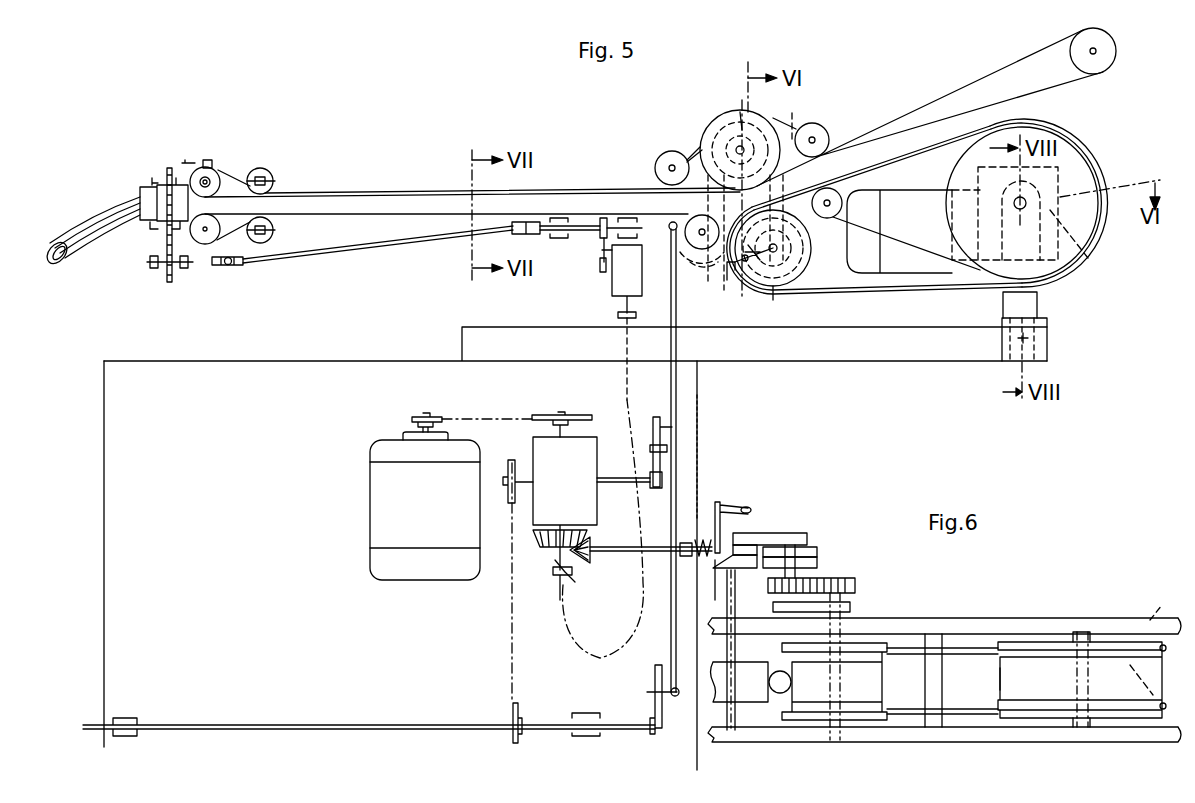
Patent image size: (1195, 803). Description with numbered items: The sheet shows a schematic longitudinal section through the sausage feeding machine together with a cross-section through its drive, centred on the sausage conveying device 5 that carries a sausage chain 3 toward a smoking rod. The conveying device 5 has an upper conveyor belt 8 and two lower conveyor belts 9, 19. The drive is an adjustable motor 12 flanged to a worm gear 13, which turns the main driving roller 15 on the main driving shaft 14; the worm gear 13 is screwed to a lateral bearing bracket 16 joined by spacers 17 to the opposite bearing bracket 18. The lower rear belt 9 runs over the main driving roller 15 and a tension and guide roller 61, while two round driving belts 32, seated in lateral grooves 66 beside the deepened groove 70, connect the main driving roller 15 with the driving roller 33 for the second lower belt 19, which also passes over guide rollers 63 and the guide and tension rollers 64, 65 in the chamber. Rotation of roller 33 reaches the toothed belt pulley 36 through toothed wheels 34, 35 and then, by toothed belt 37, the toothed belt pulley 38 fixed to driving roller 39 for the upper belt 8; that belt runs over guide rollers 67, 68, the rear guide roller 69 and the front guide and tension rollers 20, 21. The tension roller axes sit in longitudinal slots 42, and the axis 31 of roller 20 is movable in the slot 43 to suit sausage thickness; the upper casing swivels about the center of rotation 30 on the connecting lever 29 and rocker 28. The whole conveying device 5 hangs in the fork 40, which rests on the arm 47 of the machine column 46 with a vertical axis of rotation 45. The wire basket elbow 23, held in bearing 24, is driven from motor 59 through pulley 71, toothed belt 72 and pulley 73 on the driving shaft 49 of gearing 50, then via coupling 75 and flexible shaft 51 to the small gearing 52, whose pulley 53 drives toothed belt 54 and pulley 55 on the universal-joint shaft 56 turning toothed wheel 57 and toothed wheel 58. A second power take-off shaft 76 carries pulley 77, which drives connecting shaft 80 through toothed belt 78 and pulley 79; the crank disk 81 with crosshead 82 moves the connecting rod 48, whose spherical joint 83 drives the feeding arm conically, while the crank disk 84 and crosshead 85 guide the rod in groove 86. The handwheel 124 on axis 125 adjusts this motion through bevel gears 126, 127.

In FIG. 6, the sausage chain 3 is at (780, 688).
In FIG. 5, the sausage conveying device 5 is at (576, 176).
In FIG. 6, the sausage conveying device 5 is at (1008, 608).
In FIG. 5, the upper conveyor belt 8 is at (980, 80).
In FIG. 5, the lower rear conveyor belt 9 is at (930, 153).
In FIG. 5, the adjustable motor 12 is at (918, 266).
In FIG. 5, the worm gear 13 is at (1066, 195).
In FIG. 5, the main driving shaft 14 is at (1028, 208).
In FIG. 6, the main driving shaft 14 is at (1082, 640).
In FIG. 5, the main driving roller 15 is at (1048, 241).
In FIG. 6, the main driving roller 15 is at (1112, 668).
In FIG. 6, the lateral bearing bracket 16 is at (918, 622).
In FIG. 6, the spacers 17 is at (942, 640).
In FIG. 6, the bearing bracket 18 is at (962, 730).
In FIG. 5, the second lower conveyor belt 19 is at (395, 210).
In FIG. 5, the guide and tension roller 20 is at (214, 175).
In FIG. 5, the guide and tension roller 21 is at (263, 168).
In FIG. 5, the wire basket elbow 23 is at (84, 212).
In FIG. 5, the bearing 24 is at (156, 180).
In FIG. 5, the rocker 28 is at (760, 288).
In FIG. 6, the rocker 28 is at (815, 603).
In FIG. 5, the connecting lever 29 is at (795, 113).
In FIG. 6, the connecting lever 29 is at (754, 540).
In FIG. 5, the center of rotation 30 is at (206, 176).
In FIG. 5, the axis 31 is at (205, 179).
In FIG. 5, the round driving belts 32 is at (945, 292).
In FIG. 6, the round driving belts 32 is at (912, 708).
In FIG. 5, the driving roller 33 is at (803, 262).
In FIG. 6, the driving roller 33 is at (858, 660).
In FIG. 5, the toothed wheel 34 is at (790, 304).
In FIG. 6, the toothed wheel 34 is at (856, 586).
In FIG. 5, the toothed wheel 35 is at (730, 276).
In FIG. 6, the toothed wheel 35 is at (825, 582).
In FIG. 5, the toothed belt pulley 36 is at (710, 272).
In FIG. 6, the toothed belt pulley 36 is at (812, 557).
In FIG. 5, the toothed belt 37 is at (690, 148).
In FIG. 6, the toothed belt 37 is at (787, 550).
In FIG. 5, the toothed belt pulley 38 is at (710, 125).
In FIG. 6, the toothed belt pulley 38 is at (762, 550).
In FIG. 5, the driving roller 39 is at (735, 112).
In FIG. 6, the driving roller 39 is at (740, 665).
In FIG. 5, the fork 40 is at (1048, 272).
In FIG. 5, the longitudinally running slots 42 is at (282, 235).
In FIG. 5, the slot 43 is at (194, 162).
In FIG. 5, the vertical axis of rotation 45 is at (1047, 338).
In FIG. 5, the machine column 46 is at (697, 376).
In FIG. 5, the arm 47 is at (858, 340).
In FIG. 5, the connecting rod 48 is at (676, 398).
In FIG. 5, the driving shaft 49 is at (567, 560).
In FIG. 5, the gearing 50 is at (577, 492).
In FIG. 5, the flexible driving shaft 51 is at (570, 640).
In FIG. 5, the small gearing 52 is at (639, 280).
In FIG. 5, the toothed belt pulley 53 is at (600, 272).
In FIG. 5, the toothed belt 54 is at (602, 248).
In FIG. 5, the toothed belt pulley 55 is at (598, 236).
In FIG. 5, the universal-joint shaft 56 is at (392, 248).
In FIG. 5, the toothed wheel 57 is at (166, 278).
In FIG. 5, the toothed wheel 58 is at (166, 230).
In FIG. 5, the motor 59 is at (380, 494).
In FIG. 5, the tension and guide roller 61 is at (826, 220).
In FIG. 5, the guide rollers 63 is at (699, 230).
In FIG. 5, the guide and tension roller 64 is at (205, 244).
In FIG. 5, the guide and tension roller 65 is at (262, 243).
In FIG. 6, the lateral grooves 66 is at (1155, 610).
In FIG. 5, the guide roller 67 is at (816, 125).
In FIG. 5, the guide roller 68 is at (660, 158).
In FIG. 5, the guide roller 69 is at (1116, 48).
In FIG. 6, the deepened groove 70 is at (999, 674).
In FIG. 5, the toothed belt pulley 71 is at (417, 415).
In FIG. 5, the toothed belt 72 is at (487, 416).
In FIG. 5, the toothed belt pulley 73 is at (548, 414).
In FIG. 5, the coupling 75 is at (553, 572).
In FIG. 5, the second power take-off shaft 76 is at (615, 478).
In FIG. 5, the toothed belt pulley 77 is at (509, 460).
In FIG. 5, the toothed belt 78 is at (510, 598).
In FIG. 5, the toothed belt pulley 79 is at (512, 718).
In FIG. 5, the connecting shaft 80 is at (328, 722).
In FIG. 5, the crank disk 81 is at (654, 682).
In FIG. 5, the crosshead 82 is at (677, 698).
In FIG. 5, the spherical multi-angular joint 83 is at (681, 237).
In FIG. 5, the crank disk 84 is at (660, 427).
In FIG. 5, the crosshead 85 is at (667, 448).
In FIG. 5, the guide groove 86 is at (680, 463).
In FIG. 5, the handwheel 124 is at (730, 500).
In FIG. 5, the axis 125 is at (655, 550).
In FIG. 5, the bevel gear 126 is at (588, 556).
In FIG. 5, the bevel gear 127 is at (553, 550).